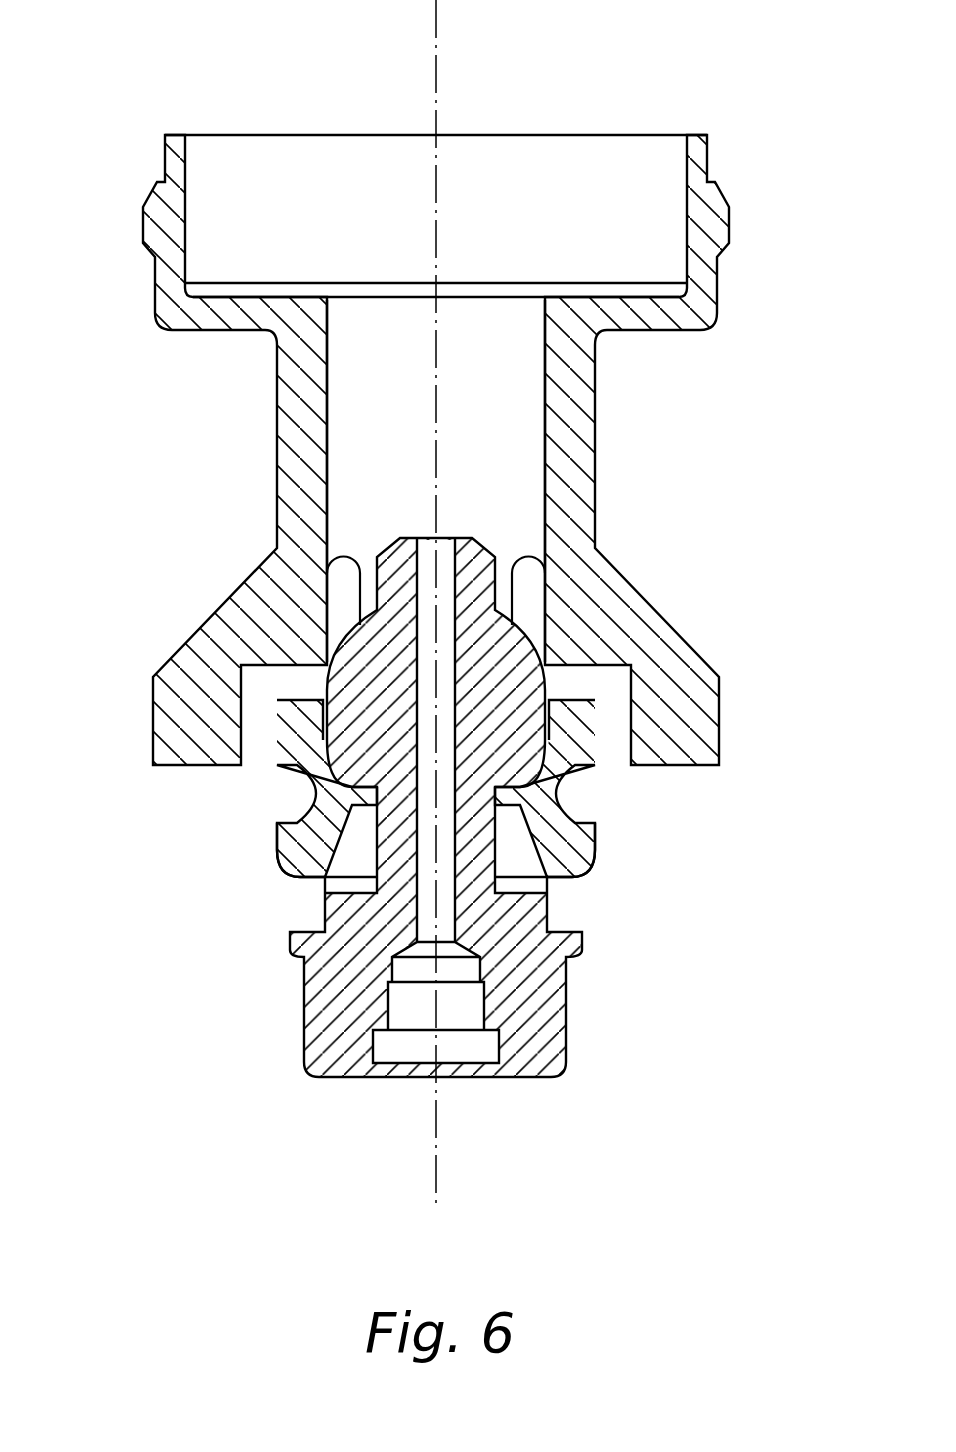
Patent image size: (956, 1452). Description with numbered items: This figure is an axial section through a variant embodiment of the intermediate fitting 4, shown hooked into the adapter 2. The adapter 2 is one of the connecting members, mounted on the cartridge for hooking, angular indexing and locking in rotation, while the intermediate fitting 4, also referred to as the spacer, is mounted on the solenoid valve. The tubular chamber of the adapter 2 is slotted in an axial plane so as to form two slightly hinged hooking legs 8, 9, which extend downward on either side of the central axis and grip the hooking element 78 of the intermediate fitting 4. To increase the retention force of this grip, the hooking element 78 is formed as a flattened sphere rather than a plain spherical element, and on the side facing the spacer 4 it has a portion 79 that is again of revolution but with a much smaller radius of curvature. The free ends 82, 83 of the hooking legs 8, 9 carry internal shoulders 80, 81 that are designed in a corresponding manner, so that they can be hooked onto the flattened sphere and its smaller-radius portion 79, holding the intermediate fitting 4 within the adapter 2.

The adapter 2 is at (668, 536).
The intermediate fitting 4 is at (395, 858).
The hooking leg 8 is at (377, 422).
The hooking leg 9 is at (495, 422).
The hooking element 78 is at (510, 700).
The portion of revolution 79 is at (363, 710).
The internal shoulder 80 is at (366, 773).
The internal shoulder 81 is at (553, 740).
The free end 82 is at (300, 845).
The free end 83 is at (572, 845).